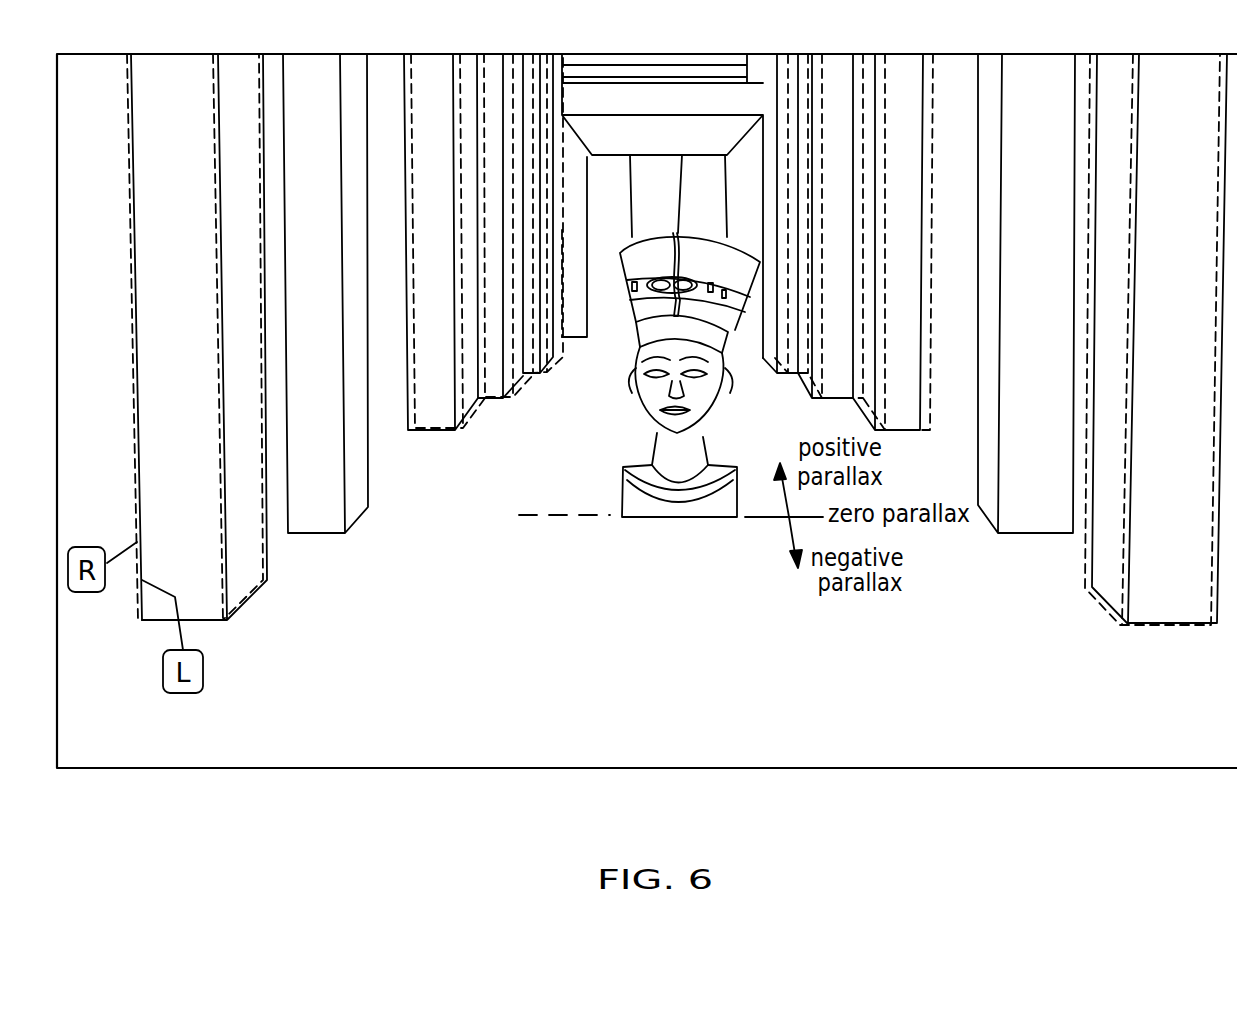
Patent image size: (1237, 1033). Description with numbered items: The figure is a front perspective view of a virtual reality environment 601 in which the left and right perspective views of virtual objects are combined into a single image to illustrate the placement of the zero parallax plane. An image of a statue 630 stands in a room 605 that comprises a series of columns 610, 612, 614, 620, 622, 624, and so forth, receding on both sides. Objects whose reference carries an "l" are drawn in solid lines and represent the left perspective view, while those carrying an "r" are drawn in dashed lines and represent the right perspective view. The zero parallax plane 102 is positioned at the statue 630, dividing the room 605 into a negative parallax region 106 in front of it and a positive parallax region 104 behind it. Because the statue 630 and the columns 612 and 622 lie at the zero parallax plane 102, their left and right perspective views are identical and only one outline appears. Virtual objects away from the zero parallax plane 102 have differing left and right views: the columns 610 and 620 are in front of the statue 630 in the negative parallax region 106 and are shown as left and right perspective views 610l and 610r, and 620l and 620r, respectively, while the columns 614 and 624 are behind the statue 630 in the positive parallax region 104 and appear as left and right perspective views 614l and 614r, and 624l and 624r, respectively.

The virtual reality environment 601 is at (435, 770).
The room 605 is at (828, 719).
The column 610 is at (252, 368).
The left perspective view of column 610 610l is at (268, 552).
The right perspective view of column 610 610r is at (222, 453).
The column 612 is at (328, 533).
The column 614 is at (491, 274).
The left perspective view of column 614 614l is at (407, 410).
The right perspective view of column 614 614r is at (468, 388).
The column 620 is at (1097, 375).
The left perspective view of column 620 620l is at (1142, 623).
The right perspective view of column 620 620r is at (1083, 575).
The column 622 is at (1020, 510).
The column 624 is at (960, 263).
The left perspective view of column 624 624l is at (923, 222).
The right perspective view of column 624 624r is at (933, 278).
The statue 630 is at (640, 460).
The zero parallax plane 102 is at (755, 520).
The positive parallax region 104 is at (783, 492).
The negative parallax region 106 is at (790, 543).